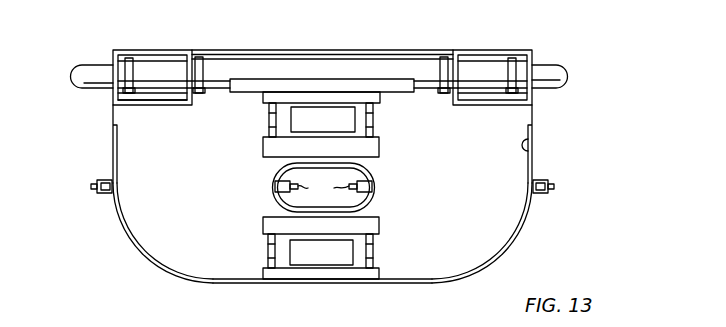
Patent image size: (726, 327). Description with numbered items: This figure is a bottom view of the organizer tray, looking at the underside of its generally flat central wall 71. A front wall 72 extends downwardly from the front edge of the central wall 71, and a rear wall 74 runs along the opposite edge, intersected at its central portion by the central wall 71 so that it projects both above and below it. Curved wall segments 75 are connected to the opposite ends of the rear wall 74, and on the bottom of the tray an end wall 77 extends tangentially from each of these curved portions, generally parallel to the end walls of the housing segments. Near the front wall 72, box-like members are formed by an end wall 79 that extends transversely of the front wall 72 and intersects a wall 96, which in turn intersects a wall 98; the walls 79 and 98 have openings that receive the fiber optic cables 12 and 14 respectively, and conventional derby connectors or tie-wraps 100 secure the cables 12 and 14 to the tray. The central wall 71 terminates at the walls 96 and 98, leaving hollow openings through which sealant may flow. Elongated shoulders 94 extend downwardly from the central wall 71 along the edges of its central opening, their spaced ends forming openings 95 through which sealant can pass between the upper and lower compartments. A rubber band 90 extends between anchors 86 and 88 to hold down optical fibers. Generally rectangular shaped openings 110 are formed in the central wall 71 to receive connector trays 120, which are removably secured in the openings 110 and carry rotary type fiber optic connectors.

The fiber optic cable 12 is at (560, 86).
The fiber optic cable 14 is at (90, 70).
The central wall 71 is at (445, 262).
The front wall 72 is at (254, 50).
The rear wall 74 is at (310, 284).
The curved wall segment 75 is at (132, 248).
The end wall 77 is at (116, 138).
The end wall 79 is at (112, 102).
The anchor 86 is at (323, 190).
The anchor 88 is at (91, 185).
The rubber band 90 is at (275, 200).
The elongated shoulder 94 is at (273, 175).
The opening 95 is at (376, 185).
The wall 96 is at (143, 106).
The wall 98 is at (197, 103).
The derby connector or tie-wrap 100 is at (202, 62).
The rectangular shaped opening 110 is at (375, 133).
The connector tray 120 is at (322, 103).